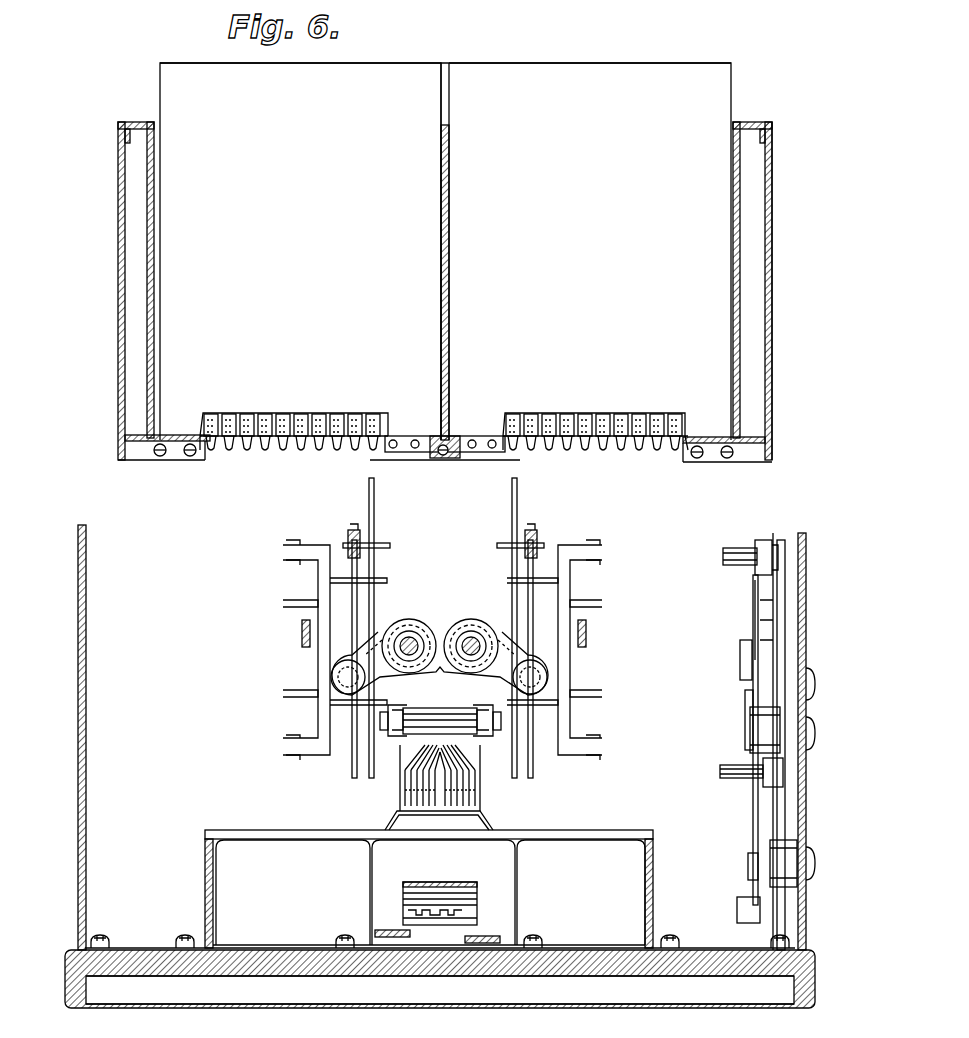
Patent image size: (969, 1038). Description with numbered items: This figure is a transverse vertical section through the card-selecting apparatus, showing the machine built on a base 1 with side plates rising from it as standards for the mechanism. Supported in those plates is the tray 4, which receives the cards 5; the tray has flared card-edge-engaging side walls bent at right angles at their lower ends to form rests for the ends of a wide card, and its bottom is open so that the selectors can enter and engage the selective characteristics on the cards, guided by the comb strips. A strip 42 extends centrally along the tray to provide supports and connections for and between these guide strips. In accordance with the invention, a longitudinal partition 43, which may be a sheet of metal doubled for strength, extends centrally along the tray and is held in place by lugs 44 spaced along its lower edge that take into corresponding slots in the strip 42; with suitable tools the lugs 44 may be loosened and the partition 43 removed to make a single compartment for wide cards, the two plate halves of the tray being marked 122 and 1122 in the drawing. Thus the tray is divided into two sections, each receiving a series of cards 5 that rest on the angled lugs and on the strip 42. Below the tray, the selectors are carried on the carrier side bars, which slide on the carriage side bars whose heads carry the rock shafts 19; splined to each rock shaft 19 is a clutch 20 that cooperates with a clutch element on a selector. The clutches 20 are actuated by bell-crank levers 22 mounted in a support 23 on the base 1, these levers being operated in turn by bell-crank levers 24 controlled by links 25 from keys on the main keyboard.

The base 1 is at (582, 962).
The tray 4 is at (772, 192).
The cards 5 is at (470, 63).
The rock shafts 19 is at (413, 656).
The clutch 20 is at (466, 620).
The bell-crank levers 22 is at (378, 688).
The support 23 is at (445, 812).
The bell-crank levers 24 is at (468, 734).
The links 25 is at (475, 805).
The strip 42 is at (456, 437).
The partition 43 is at (441, 262).
The lugs 44 is at (440, 455).
The left plate 122 is at (300, 251).
The right plate 1122 is at (590, 251).